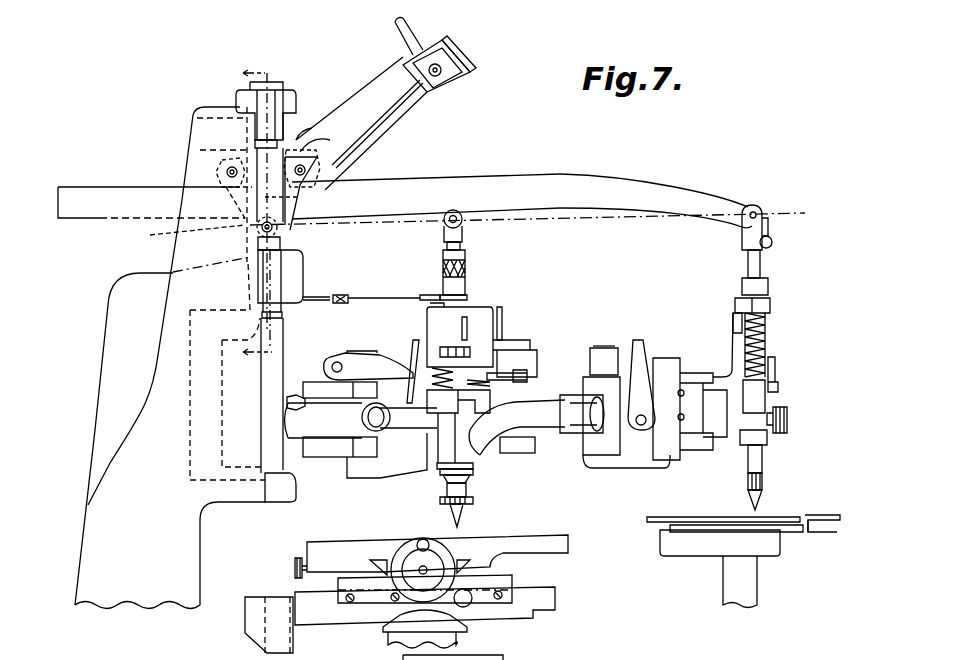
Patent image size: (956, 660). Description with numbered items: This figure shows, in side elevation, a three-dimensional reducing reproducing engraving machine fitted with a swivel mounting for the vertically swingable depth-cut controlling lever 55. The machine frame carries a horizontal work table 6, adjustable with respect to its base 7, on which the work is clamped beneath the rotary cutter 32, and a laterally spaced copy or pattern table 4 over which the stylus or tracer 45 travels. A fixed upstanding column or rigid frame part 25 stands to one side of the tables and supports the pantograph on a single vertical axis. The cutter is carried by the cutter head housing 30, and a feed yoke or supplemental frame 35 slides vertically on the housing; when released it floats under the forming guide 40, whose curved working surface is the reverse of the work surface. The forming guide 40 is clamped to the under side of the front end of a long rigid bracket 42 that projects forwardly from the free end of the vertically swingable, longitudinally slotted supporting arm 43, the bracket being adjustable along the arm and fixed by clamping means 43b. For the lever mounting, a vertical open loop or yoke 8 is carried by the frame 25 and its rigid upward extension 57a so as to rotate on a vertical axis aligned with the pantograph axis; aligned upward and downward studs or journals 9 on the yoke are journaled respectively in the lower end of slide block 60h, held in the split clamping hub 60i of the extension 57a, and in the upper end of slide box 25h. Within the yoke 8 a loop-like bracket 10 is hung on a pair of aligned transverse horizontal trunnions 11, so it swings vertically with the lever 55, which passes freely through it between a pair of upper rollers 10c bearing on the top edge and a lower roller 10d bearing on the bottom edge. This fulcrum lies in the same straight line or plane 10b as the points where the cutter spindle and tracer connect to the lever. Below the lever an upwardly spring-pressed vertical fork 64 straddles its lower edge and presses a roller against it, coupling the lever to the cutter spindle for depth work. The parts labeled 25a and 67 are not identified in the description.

The copy or pattern table 4 is at (825, 517).
The work table 6 is at (568, 550).
The base 7 is at (533, 615).
The yoke 8 is at (320, 200).
The studs or journals 9 is at (290, 142).
The bracket 10 is at (230, 195).
The straight line or plane 10b is at (601, 215).
The rollers 10c is at (405, 140).
The roller 10d is at (172, 237).
The trunnions 11 is at (255, 232).
The column or rigid frame part 25 is at (90, 582).
The bracket 25a is at (305, 280).
The slide box 25h is at (240, 265).
The cutter head housing 30 is at (458, 429).
The cutter 32 is at (462, 515).
The feed yoke 35 is at (470, 310).
The forming guide 40 is at (455, 85).
The bracket 42 is at (444, 42).
The supporting arm 43 is at (357, 108).
The clamping means 43b is at (396, 24).
The stylus or tracer 45 is at (765, 357).
The lever 55 is at (553, 183).
The upward extension 57a is at (200, 145).
The slide block 60h is at (275, 120).
The split clamping hub 60i is at (272, 90).
The fork 64 is at (460, 207).
The knurled nut 67 is at (467, 265).